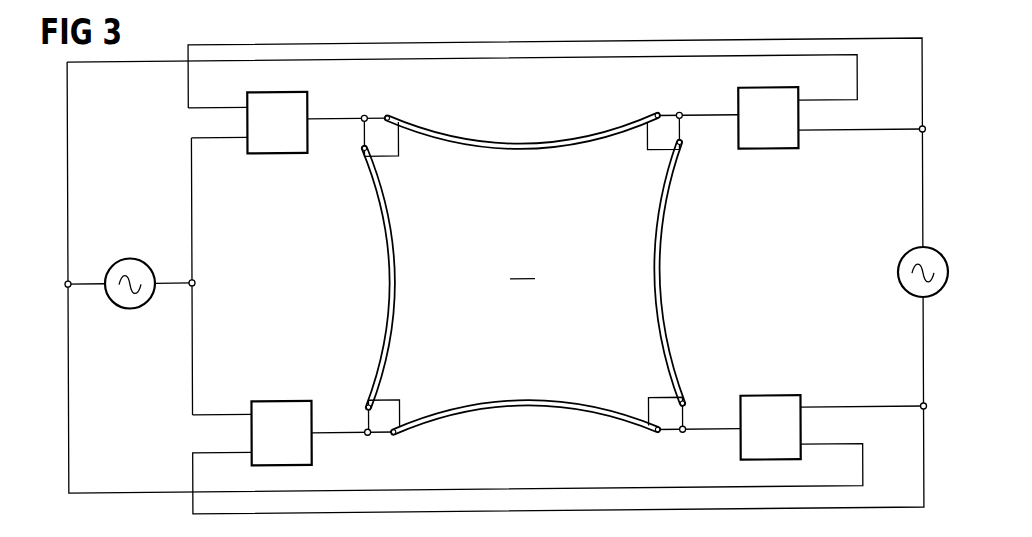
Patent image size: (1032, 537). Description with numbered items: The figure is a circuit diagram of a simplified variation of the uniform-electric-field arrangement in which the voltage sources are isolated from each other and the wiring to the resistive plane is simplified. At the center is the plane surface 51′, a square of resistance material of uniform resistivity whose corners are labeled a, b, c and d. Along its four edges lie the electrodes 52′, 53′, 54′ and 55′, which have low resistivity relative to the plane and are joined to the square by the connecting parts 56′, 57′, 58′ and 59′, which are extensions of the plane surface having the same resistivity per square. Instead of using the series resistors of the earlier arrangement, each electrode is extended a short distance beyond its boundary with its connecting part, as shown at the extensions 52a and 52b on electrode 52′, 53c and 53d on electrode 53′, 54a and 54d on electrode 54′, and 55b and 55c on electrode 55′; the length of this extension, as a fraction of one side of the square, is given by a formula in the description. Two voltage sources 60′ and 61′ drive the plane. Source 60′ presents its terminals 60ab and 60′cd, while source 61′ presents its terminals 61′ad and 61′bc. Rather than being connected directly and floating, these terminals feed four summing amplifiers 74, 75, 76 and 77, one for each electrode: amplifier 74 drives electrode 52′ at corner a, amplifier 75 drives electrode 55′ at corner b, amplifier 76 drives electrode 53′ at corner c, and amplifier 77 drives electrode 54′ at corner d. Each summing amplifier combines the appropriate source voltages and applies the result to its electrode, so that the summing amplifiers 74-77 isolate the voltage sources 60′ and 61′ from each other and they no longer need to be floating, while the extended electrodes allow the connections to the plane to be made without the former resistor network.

The plane surface 51′ is at (522, 267).
The electrode 52′ is at (489, 139).
The electrode 53′ is at (507, 409).
The electrode 54′ is at (388, 254).
The electrode 55′ is at (662, 270).
The electrode extension 52a is at (386, 113).
The electrode extension 52b is at (654, 111).
The electrode extension 53c is at (652, 437).
The electrode extension 53d is at (396, 438).
The electrode extension 54a is at (361, 148).
The electrode extension 54d is at (364, 407).
The electrode extension 55b is at (684, 145).
The electrode extension 55c is at (688, 400).
The connecting part 56′ is at (602, 158).
The connecting part 57′ is at (630, 400).
The connecting part 58′ is at (377, 355).
The connecting part 59′ is at (680, 372).
The voltage source 60′ is at (928, 251).
The voltage source 61′ is at (121, 257).
The voltage source terminal 60ab is at (926, 134).
The voltage source terminal 60′cd is at (926, 409).
The voltage source terminal 61′ad is at (193, 284).
The voltage source terminal 61′bc is at (68, 284).
The summing amplifier 74 is at (308, 100).
The summing amplifier 75 is at (798, 95).
The summing amplifier 76 is at (768, 397).
The summing amplifier 77 is at (272, 398).
The corner a is at (398, 150).
The corner b is at (652, 140).
The corner c is at (649, 426).
The corner d is at (399, 412).